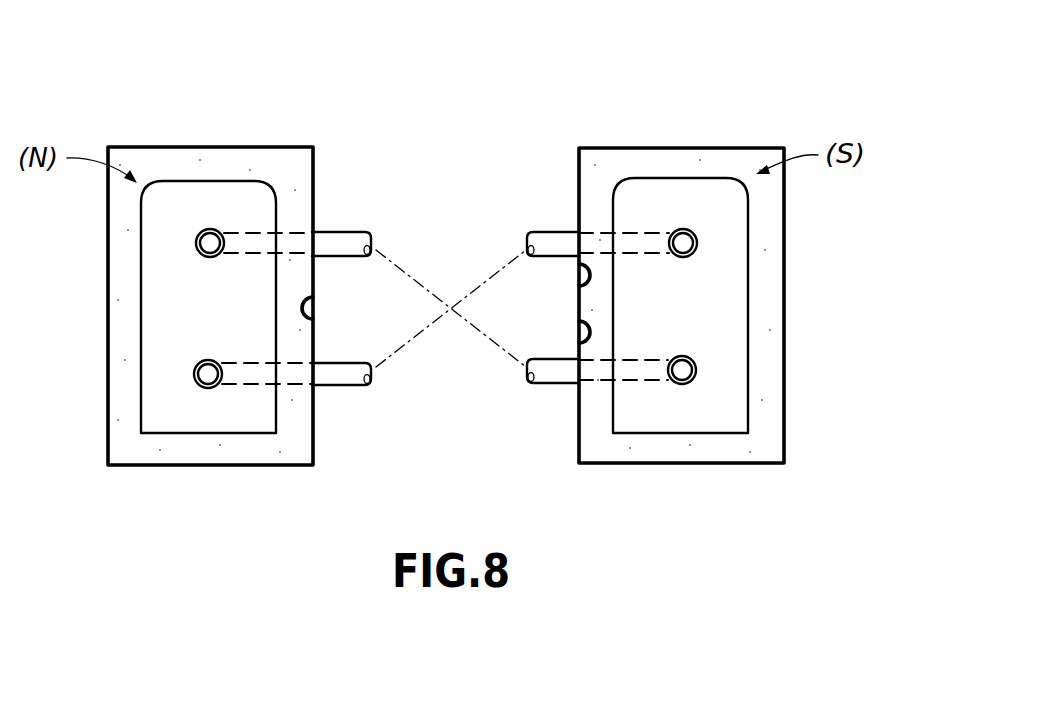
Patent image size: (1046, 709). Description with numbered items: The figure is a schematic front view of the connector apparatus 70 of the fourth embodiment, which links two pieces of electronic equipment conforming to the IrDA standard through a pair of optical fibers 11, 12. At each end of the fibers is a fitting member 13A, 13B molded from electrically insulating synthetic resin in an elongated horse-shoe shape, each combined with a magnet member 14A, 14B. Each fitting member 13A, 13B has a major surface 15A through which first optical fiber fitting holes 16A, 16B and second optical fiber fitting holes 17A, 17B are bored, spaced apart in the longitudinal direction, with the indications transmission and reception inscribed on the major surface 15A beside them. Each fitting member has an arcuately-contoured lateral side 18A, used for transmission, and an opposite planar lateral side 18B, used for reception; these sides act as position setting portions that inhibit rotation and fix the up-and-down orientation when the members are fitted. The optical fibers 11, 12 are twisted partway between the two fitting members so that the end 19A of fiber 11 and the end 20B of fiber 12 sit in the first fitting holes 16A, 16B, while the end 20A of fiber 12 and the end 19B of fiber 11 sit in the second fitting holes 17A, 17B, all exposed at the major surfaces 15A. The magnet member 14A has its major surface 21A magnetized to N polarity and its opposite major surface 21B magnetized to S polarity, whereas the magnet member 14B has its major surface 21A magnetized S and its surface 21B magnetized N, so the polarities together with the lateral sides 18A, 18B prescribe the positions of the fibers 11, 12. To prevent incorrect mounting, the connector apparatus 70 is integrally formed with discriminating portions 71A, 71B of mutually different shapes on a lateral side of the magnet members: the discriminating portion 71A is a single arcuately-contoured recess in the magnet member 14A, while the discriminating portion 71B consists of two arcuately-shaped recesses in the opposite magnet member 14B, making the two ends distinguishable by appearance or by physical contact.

The optical fiber 11 is at (357, 236).
The optical fiber 12 is at (347, 378).
The fitting member 13A is at (153, 428).
The fitting member 13B is at (625, 392).
The magnet member 14A is at (207, 157).
The magnet member 14B is at (658, 158).
The major surface 15A is at (267, 426).
The first optical fiber fitting hole 16A is at (198, 236).
The first optical fiber fitting hole 16B is at (694, 237).
The second optical fiber fitting hole 17A is at (200, 364).
The second optical fiber fitting hole 17B is at (683, 357).
The arcuately-contoured lateral side 18A is at (180, 181).
The planar lateral side 18B is at (207, 437).
The end of optical fiber 19A is at (206, 246).
The end of optical fiber 19B is at (686, 368).
The end of optical fiber 20A is at (206, 376).
The end of optical fiber 20B is at (690, 243).
The major surface of magnet member 21A is at (290, 160).
The opposite side major surface of magnet member 21B is at (747, 158).
The connector apparatus 70 is at (503, 140).
The discriminating portion 71A is at (308, 307).
The discriminating portion 71B is at (583, 278).